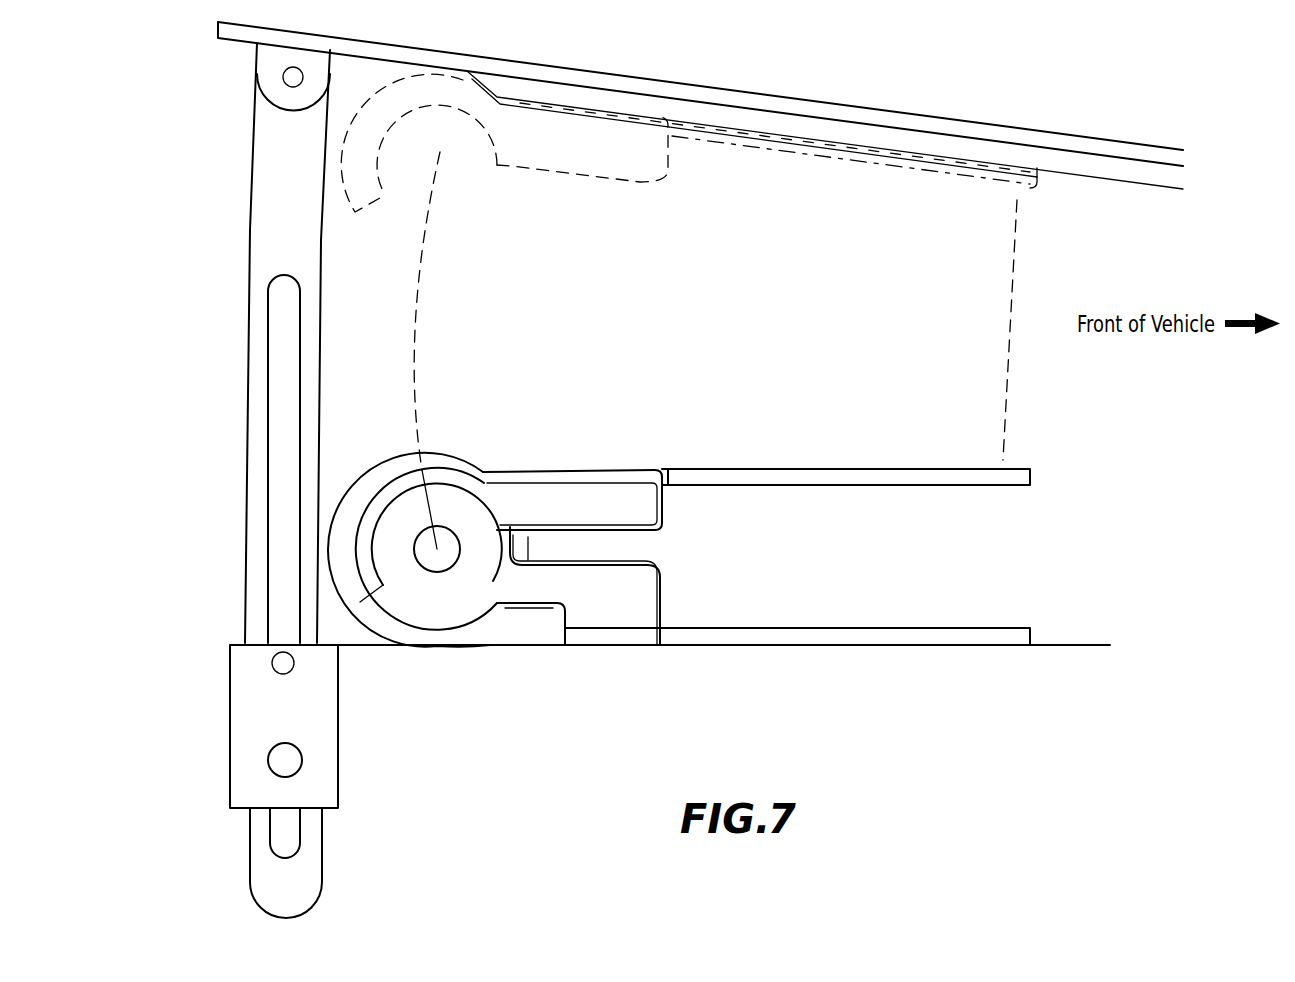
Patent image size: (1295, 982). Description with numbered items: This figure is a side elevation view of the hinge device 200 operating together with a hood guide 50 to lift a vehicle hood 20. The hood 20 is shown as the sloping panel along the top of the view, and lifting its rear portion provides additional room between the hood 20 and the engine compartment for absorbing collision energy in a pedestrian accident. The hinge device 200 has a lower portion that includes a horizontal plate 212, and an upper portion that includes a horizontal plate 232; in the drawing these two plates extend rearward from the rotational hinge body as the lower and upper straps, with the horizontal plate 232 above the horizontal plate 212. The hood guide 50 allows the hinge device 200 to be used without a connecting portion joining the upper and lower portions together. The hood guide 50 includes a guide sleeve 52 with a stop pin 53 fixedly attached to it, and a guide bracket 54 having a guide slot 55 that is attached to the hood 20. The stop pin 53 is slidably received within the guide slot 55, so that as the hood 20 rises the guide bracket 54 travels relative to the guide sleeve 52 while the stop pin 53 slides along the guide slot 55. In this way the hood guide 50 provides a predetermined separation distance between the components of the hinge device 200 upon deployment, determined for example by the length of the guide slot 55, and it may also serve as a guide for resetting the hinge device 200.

The hood 20 is at (660, 80).
The hood guide 50 is at (197, 480).
The guide sleeve 52 is at (255, 718).
The stop pin 53 is at (275, 758).
The guide bracket 54 is at (268, 130).
The guide slot 55 is at (287, 478).
The hinge device 200 is at (719, 388).
The horizontal plate 212 is at (840, 637).
The horizontal plate 232 is at (767, 473).